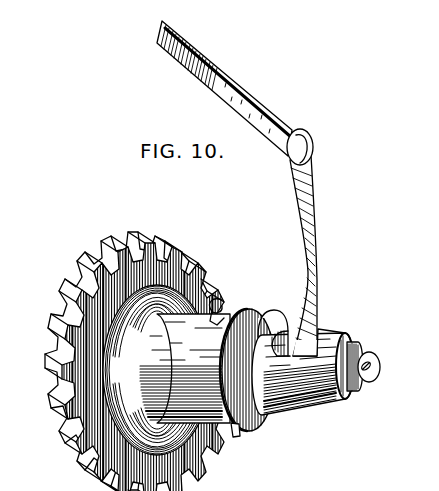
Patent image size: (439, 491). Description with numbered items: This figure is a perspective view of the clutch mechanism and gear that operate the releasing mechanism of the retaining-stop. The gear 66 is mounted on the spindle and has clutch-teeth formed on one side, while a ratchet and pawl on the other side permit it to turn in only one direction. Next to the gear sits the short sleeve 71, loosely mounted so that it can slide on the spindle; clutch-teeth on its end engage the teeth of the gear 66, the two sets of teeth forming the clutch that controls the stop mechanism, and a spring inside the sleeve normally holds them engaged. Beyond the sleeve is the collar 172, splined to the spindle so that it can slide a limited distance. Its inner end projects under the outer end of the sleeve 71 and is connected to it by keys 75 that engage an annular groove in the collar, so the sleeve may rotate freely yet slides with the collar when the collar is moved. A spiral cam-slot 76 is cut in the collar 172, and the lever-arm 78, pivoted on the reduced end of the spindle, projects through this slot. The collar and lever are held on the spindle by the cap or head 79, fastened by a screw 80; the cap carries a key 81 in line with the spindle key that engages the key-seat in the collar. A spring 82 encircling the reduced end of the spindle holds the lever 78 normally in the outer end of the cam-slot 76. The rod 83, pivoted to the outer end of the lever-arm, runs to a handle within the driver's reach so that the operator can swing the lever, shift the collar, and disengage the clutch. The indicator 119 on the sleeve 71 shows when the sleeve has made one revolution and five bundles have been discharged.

The gear 66 is at (141, 353).
The sleeve 71 is at (185, 368).
The keys 75 is at (241, 433).
The spiral cam-slot 76 is at (290, 340).
The lever-arm 78 is at (316, 230).
The cap or head 79 is at (368, 354).
The screw 80 is at (380, 370).
The key 81 is at (360, 386).
The spring 82 is at (299, 336).
The rod 83 is at (224, 88).
The indicator 119 is at (224, 303).
The collar 172 is at (305, 410).